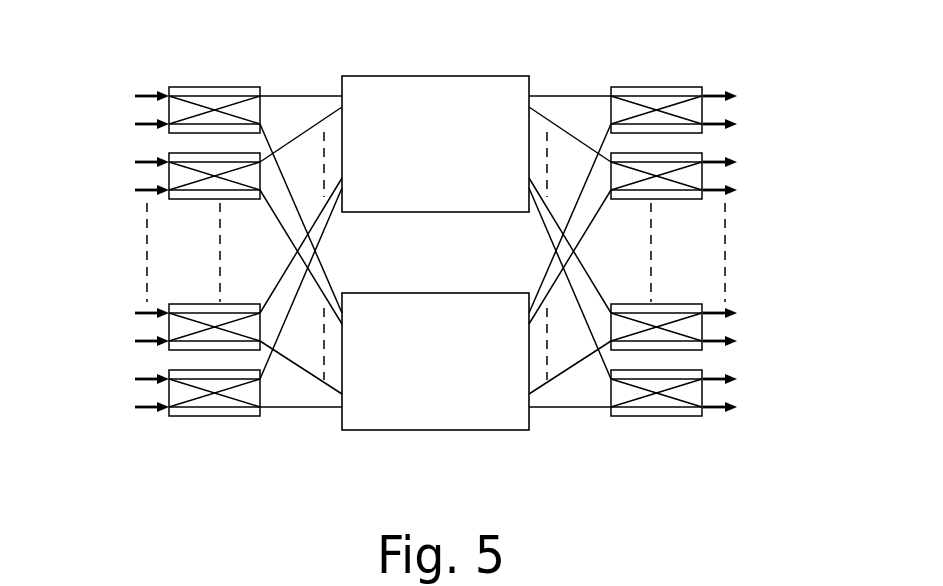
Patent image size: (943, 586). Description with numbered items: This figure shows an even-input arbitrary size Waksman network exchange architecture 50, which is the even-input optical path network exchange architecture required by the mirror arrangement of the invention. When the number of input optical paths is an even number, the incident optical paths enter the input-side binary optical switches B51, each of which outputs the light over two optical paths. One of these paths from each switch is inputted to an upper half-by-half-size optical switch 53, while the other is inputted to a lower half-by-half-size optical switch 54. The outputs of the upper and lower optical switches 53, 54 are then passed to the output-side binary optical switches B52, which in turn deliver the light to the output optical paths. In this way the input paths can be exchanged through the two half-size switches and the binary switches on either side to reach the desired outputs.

The even-input arbitrary size Waksman network exchange architecture 50 is at (697, 73).
The upper N/2×N/2 optical switch 53 is at (445, 75).
The lower N/2×N/2 optical switch 54 is at (442, 431).
The binary optical switches B51 is at (169, 393).
The binary optical switches B52 is at (703, 110).